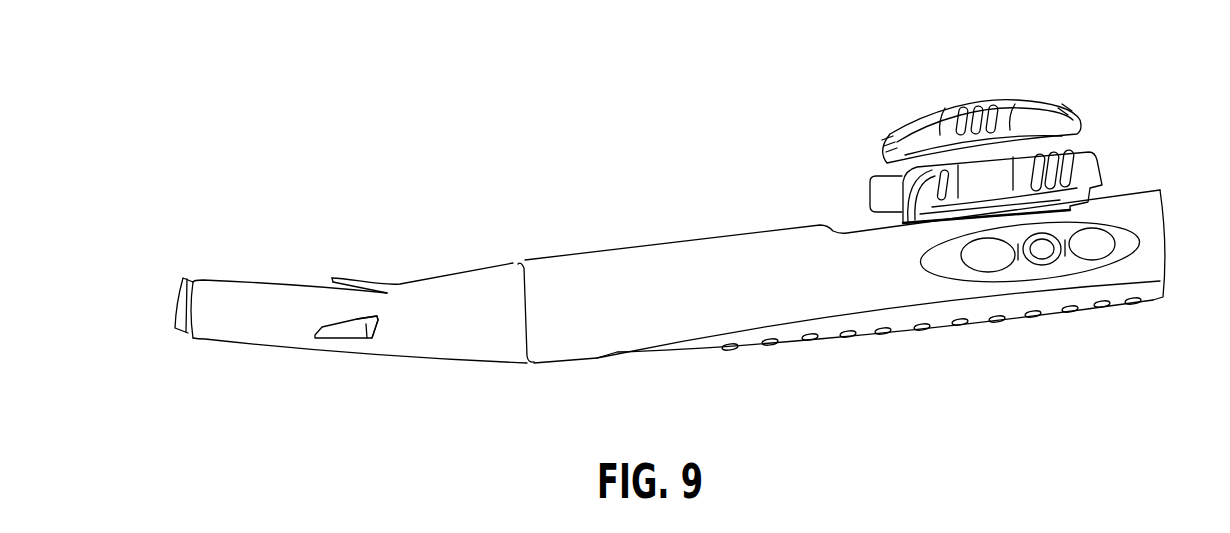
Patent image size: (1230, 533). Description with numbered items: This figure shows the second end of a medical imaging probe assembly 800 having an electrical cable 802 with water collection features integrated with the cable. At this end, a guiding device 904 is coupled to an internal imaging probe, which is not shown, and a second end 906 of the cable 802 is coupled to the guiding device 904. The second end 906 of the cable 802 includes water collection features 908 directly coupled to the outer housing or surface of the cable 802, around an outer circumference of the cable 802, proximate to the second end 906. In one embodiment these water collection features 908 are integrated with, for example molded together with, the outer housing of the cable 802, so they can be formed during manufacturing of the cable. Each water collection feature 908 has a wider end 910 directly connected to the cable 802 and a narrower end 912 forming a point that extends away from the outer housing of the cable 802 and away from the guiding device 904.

The medical imaging probe assembly 800 is at (1053, 50).
The electrical cable 802 is at (197, 310).
The guiding device 904 is at (763, 256).
The second end of the cable 906 is at (503, 240).
The water collection features 908 is at (349, 276).
The wider end 910 is at (366, 337).
The narrower end 912 is at (315, 337).